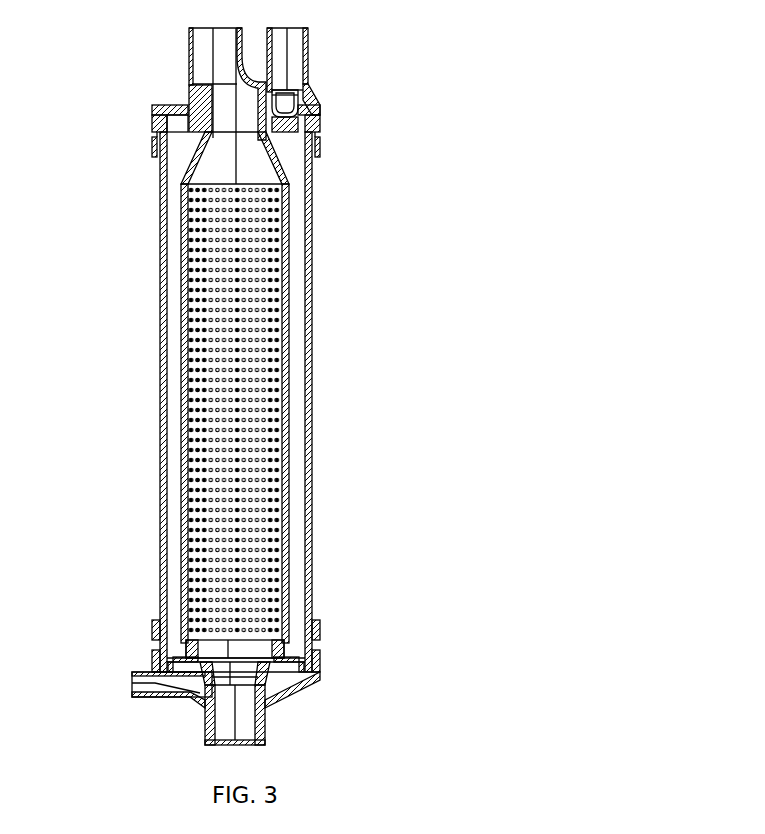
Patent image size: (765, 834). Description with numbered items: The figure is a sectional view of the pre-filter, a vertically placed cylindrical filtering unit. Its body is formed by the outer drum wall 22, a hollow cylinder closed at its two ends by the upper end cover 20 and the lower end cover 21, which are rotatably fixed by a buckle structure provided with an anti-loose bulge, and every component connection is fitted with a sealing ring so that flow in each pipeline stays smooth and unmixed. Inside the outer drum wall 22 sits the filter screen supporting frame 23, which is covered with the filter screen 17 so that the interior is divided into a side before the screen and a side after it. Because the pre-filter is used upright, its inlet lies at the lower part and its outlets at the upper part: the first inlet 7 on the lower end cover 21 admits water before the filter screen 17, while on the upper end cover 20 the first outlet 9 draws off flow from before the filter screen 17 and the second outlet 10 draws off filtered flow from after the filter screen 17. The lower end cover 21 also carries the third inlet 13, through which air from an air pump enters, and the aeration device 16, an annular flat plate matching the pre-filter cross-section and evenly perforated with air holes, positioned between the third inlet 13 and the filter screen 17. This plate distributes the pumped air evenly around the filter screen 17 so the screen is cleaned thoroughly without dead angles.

The first inlet 7 is at (242, 717).
The first outlet 9 is at (317, 137).
The second outlet 10 is at (292, 40).
The third inlet 13 is at (153, 683).
The aeration device 16 is at (311, 650).
The filter screen 17 is at (252, 490).
The upper end cover 20 is at (205, 62).
The lower end cover 21 is at (303, 665).
The outer drum wall 22 is at (308, 316).
The filter screen supporting frame 23 is at (284, 406).